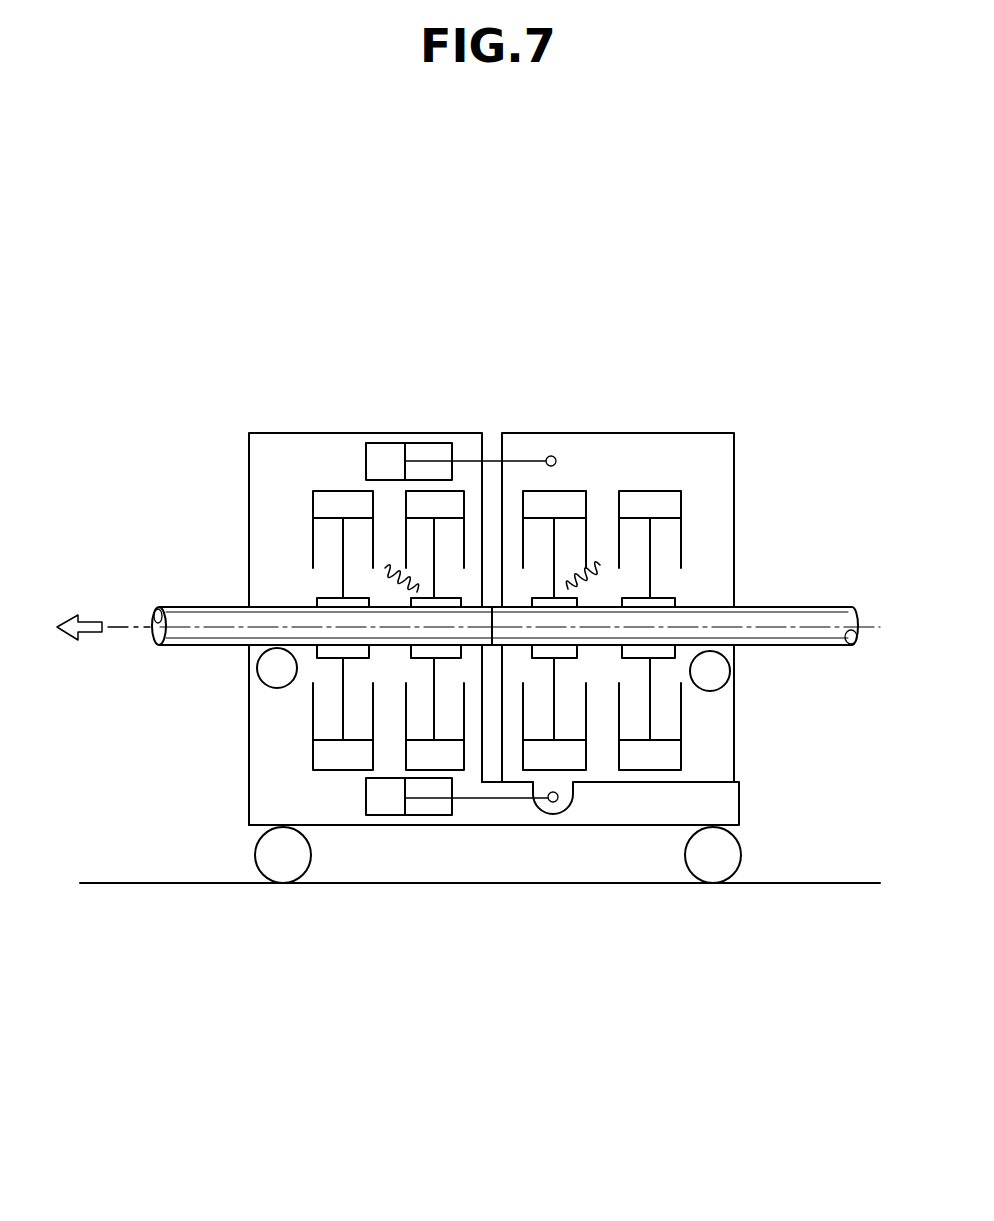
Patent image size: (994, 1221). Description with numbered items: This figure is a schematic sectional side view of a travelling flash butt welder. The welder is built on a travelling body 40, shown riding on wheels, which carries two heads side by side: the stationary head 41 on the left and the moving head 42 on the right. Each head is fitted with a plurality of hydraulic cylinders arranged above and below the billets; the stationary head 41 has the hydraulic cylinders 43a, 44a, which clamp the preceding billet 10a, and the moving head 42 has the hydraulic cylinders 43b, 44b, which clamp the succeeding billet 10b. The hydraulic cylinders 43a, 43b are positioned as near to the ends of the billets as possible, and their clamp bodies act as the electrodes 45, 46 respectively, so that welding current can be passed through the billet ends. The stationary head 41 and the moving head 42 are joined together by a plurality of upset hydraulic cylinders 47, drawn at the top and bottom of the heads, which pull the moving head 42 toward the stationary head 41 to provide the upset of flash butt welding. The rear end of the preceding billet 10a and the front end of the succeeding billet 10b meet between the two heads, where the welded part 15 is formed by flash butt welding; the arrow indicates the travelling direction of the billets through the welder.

The preceding billet 10a is at (205, 617).
The succeeding billet 10b is at (822, 617).
The welded part 15 is at (487, 638).
The travelling body 40 is at (741, 805).
The stationary head 41 is at (270, 433).
The moving head 42 is at (735, 468).
The hydraulic cylinder 43a is at (440, 505).
The hydraulic cylinder 43b is at (567, 503).
The hydraulic cylinder 44a is at (334, 490).
The hydraulic cylinder 44b is at (656, 500).
The electrode 45 is at (432, 598).
The electrode 46 is at (581, 602).
The upset hydraulic cylinder 47 is at (386, 460).